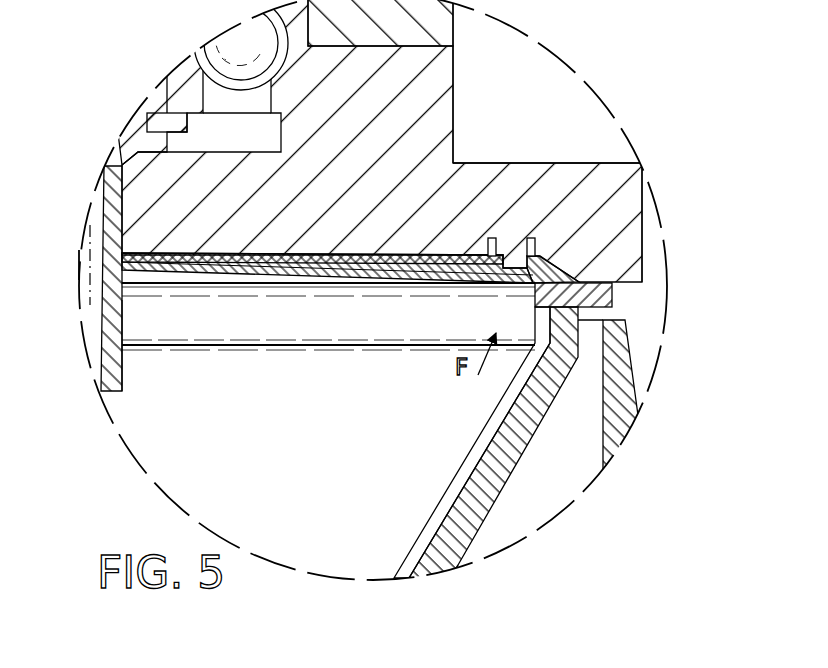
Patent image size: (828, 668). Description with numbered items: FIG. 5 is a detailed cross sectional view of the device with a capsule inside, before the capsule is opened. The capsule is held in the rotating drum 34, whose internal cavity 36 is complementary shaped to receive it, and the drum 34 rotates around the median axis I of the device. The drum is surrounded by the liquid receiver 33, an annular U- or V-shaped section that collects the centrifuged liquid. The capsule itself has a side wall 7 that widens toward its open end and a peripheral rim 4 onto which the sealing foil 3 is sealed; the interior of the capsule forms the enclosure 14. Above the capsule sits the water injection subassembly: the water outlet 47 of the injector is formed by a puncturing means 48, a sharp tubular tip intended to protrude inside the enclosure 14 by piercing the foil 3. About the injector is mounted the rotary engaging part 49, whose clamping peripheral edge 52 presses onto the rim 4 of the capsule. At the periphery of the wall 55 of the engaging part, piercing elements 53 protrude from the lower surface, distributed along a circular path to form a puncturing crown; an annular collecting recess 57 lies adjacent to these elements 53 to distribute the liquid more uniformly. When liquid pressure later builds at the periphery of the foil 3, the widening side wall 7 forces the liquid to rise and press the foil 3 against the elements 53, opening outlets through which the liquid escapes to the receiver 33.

The sealing foil 3 is at (393, 289).
The peripheral rim 4 is at (613, 293).
The side wall 7 is at (518, 383).
The enclosure 14 is at (150, 465).
The liquid receiver 33 is at (631, 394).
The rotating drum 34 is at (501, 467).
The internal cavity 36 is at (462, 523).
The water outlet 47 is at (106, 394).
The puncturing means 48 is at (123, 376).
The rotary engaging part 49 is at (480, 39).
The clamping peripheral edge 52 is at (645, 266).
The piercing elements 53 is at (528, 256).
The wall 55 is at (489, 256).
The annular collecting recess 57 is at (541, 258).
The median axis I is at (79, 267).